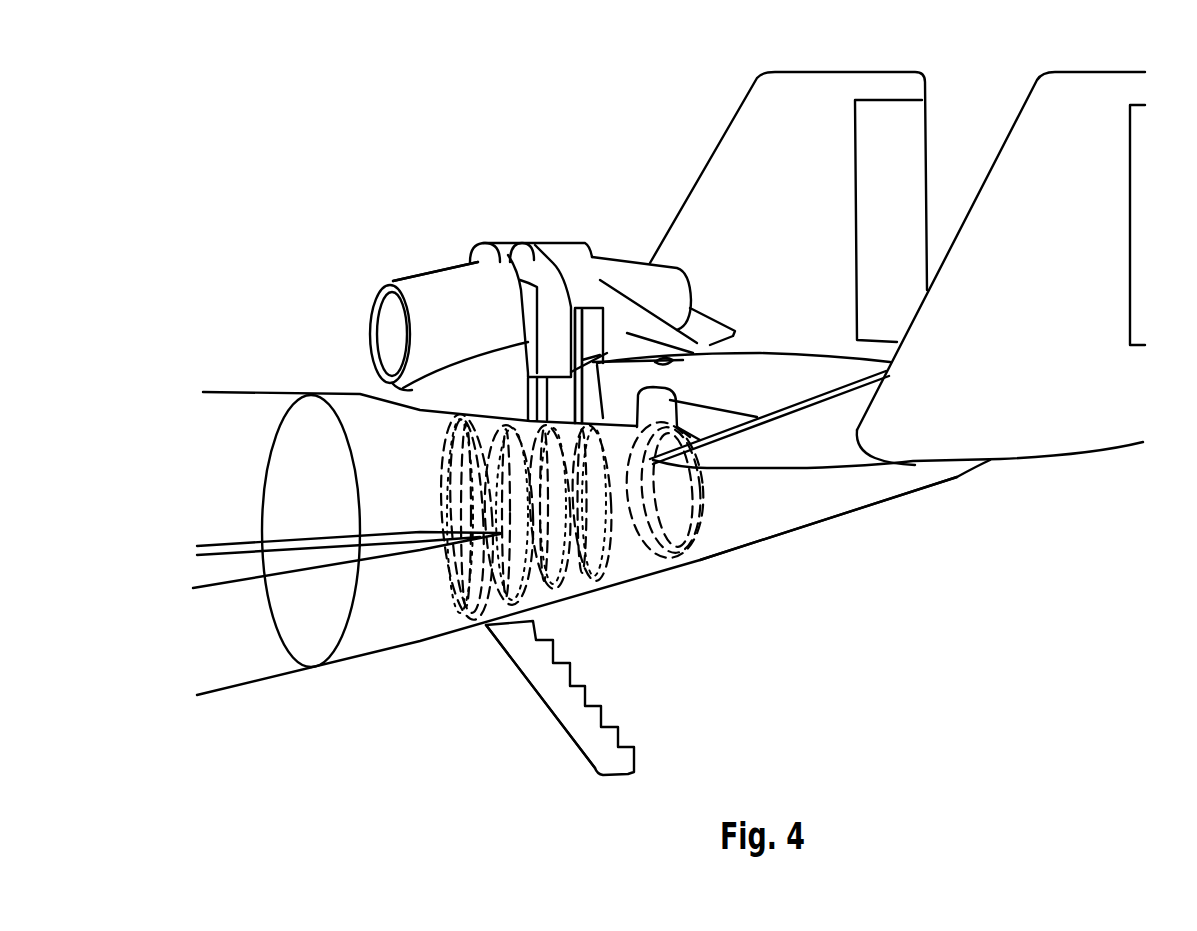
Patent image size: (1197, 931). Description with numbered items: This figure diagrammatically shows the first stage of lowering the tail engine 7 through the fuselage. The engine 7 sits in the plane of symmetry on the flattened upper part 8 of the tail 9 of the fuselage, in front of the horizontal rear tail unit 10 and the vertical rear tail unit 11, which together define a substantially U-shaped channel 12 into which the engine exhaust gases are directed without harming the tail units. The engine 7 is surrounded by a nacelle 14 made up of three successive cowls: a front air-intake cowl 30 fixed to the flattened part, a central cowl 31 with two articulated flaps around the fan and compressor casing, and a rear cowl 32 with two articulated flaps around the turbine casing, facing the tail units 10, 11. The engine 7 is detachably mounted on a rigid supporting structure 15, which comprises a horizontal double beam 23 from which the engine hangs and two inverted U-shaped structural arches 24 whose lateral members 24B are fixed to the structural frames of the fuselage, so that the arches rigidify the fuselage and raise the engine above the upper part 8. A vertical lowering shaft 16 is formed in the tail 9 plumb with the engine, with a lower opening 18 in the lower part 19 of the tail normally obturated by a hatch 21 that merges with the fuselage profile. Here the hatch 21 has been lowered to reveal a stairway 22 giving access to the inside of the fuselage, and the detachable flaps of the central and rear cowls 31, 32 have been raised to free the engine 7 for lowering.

The tail engine 7 is at (577, 307).
The upper part of the tail 8 is at (365, 417).
The tail of the fuselage 9 is at (718, 563).
The horizontal rear tail unit 10 is at (823, 447).
The vertical rear tail unit 11 is at (1032, 372).
The U-shaped channel 12 is at (945, 135).
The nacelle 14 is at (388, 256).
The supporting structure 15 is at (466, 263).
The lowering shaft 16 is at (622, 572).
The lower opening 18 is at (593, 590).
The lower part of the tail 19 is at (465, 627).
The hatch 21 is at (557, 703).
The stairway 22 is at (620, 733).
The double beam 23 is at (561, 335).
The structural arches 24 is at (583, 392).
The lateral members of the arches 24B is at (468, 492).
The front air-intake cowl 30 is at (417, 327).
The central cowl 31 is at (555, 250).
The rear cowl 32 is at (647, 257).